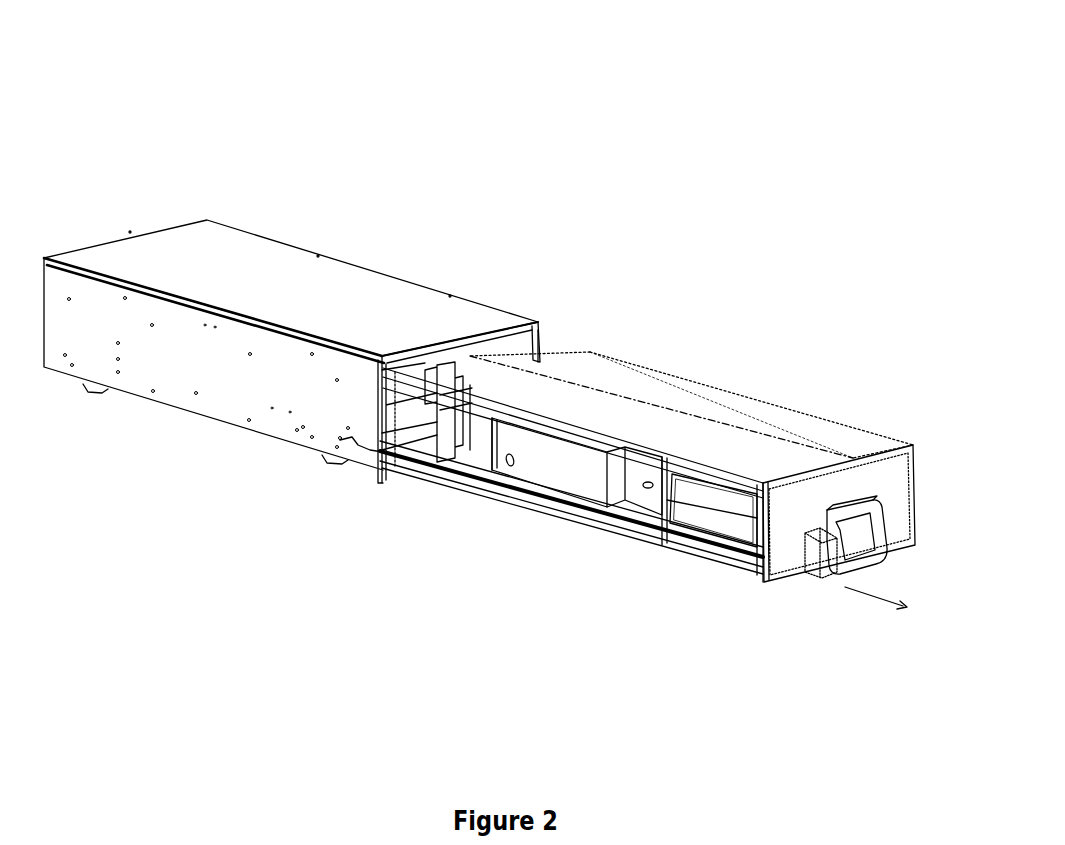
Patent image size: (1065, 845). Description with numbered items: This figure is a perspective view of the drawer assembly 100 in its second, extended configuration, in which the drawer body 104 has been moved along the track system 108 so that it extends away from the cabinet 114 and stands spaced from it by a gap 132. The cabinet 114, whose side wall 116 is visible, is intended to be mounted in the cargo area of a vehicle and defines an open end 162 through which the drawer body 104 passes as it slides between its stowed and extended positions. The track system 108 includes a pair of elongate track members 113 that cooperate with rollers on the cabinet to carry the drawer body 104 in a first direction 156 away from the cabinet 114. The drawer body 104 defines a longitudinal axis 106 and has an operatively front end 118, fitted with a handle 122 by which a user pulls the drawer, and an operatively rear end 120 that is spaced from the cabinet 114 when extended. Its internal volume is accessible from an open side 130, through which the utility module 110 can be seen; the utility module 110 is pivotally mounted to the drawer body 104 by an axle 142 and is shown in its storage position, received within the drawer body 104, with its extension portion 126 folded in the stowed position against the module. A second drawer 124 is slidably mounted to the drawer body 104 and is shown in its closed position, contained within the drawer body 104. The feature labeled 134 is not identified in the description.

The drawer assembly 100 is at (479, 343).
The drawer body 104 is at (787, 425).
The longitudinal axis 106 is at (696, 420).
The track system 108 is at (549, 491).
The utility module 110 is at (570, 483).
The track members 113 is at (507, 490).
The cabinet 114 is at (355, 290).
The side wall 116 is at (185, 373).
The operatively front end 118 is at (848, 445).
The operatively rear end 120 is at (590, 350).
The handle 122 is at (853, 503).
The second drawer 124 is at (728, 522).
The extension portion 126 is at (560, 422).
The open side 130 is at (637, 508).
The gap 132 is at (565, 345).
The flange 134 is at (515, 325).
The axle 142 is at (458, 405).
The first direction 156 is at (848, 588).
The open end 162 is at (352, 445).